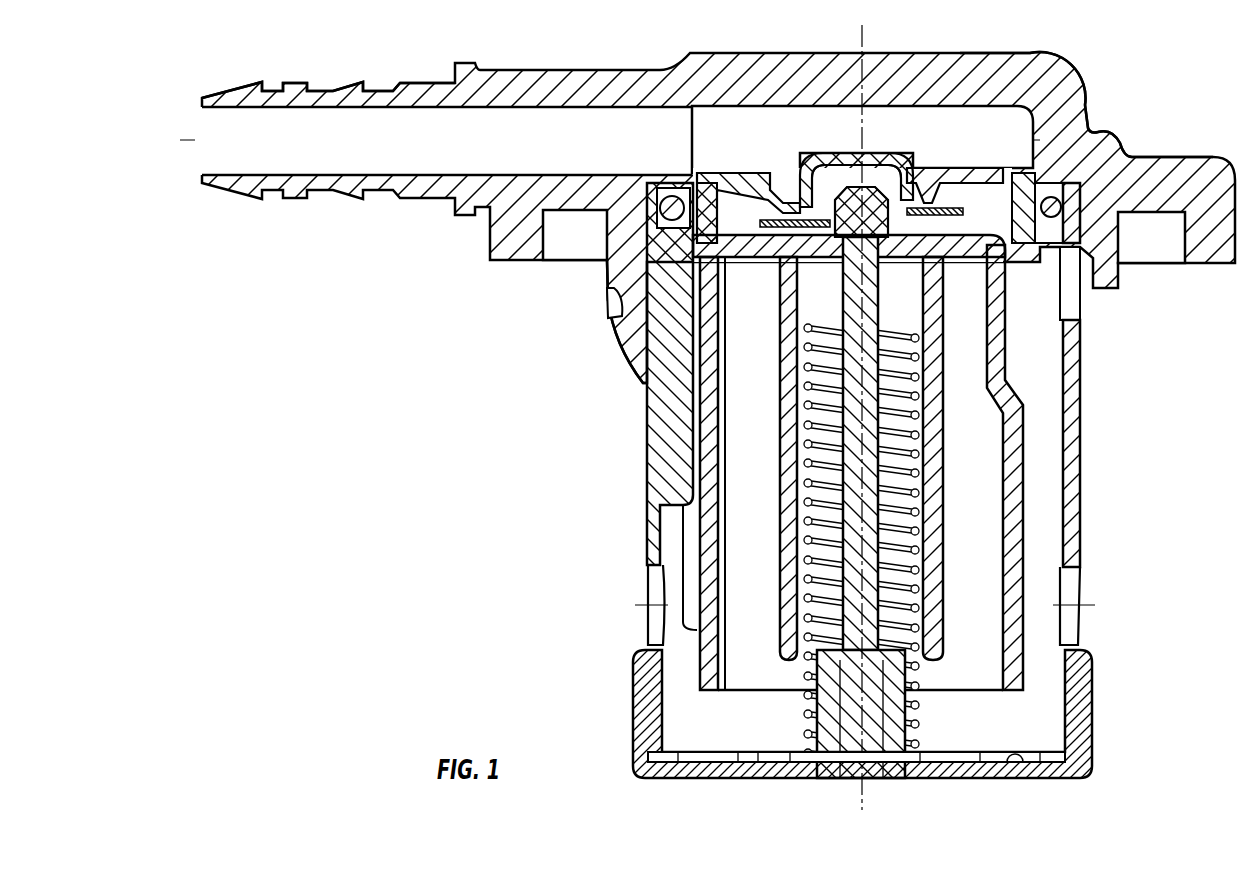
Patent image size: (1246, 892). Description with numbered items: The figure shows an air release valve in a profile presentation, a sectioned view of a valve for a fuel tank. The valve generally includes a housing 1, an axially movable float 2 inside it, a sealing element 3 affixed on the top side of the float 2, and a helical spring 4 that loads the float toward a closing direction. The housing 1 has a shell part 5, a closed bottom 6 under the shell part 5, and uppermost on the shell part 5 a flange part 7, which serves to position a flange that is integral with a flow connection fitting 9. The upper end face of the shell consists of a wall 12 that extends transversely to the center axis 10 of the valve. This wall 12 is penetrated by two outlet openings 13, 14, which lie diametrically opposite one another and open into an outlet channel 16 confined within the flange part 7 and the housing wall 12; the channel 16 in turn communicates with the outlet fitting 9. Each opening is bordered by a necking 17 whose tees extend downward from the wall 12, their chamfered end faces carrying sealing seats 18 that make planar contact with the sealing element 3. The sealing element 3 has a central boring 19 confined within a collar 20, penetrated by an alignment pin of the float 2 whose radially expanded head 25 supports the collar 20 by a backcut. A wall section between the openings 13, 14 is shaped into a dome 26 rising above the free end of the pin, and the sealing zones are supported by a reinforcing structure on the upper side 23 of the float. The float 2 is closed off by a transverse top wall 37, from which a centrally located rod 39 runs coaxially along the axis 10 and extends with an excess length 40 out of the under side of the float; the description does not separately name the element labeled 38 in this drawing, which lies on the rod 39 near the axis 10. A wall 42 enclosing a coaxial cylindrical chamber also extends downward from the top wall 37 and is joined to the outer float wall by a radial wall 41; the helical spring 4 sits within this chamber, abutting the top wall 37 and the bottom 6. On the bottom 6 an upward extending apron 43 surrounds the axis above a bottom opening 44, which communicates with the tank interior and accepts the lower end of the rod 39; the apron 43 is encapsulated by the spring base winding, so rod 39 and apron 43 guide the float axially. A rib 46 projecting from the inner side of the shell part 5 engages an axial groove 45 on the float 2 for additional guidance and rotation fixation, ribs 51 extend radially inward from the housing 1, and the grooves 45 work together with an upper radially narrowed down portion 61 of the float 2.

The housing 1 is at (881, 409).
The float 2 is at (891, 487).
The sealing element 3 is at (755, 212).
The helical spring 4 is at (950, 600).
The shell part 5 is at (1072, 442).
The bottom 6 is at (1088, 762).
The flange part 7 is at (1013, 56).
The flow connection fitting 9 is at (333, 84).
The center axis 10 is at (862, 800).
The wall 12 is at (1047, 155).
The outlet opening 13 is at (745, 178).
The outlet opening 14 is at (932, 183).
The outlet channel 16 is at (812, 168).
The necking 17 is at (790, 200).
The sealing seat 18 is at (737, 253).
The central boring 19 is at (695, 483).
The collar 20 is at (700, 433).
The upper side of the float 23 is at (1076, 186).
The radially expanded head 25 is at (845, 220).
The dome 26 is at (868, 188).
The transverse top wall 37 is at (905, 258).
The valve stem 38 is at (873, 526).
The rod 39 is at (945, 583).
The excess length 40 is at (805, 665).
The radial wall 41 is at (745, 648).
The wall 42 is at (780, 552).
The apron 43 is at (925, 695).
The bottom opening 44 is at (883, 782).
The groove 45 is at (690, 530).
The rib 46 is at (670, 420).
The ribs 51 is at (700, 258).
The upper radially narrowed down portion 61 is at (1000, 296).